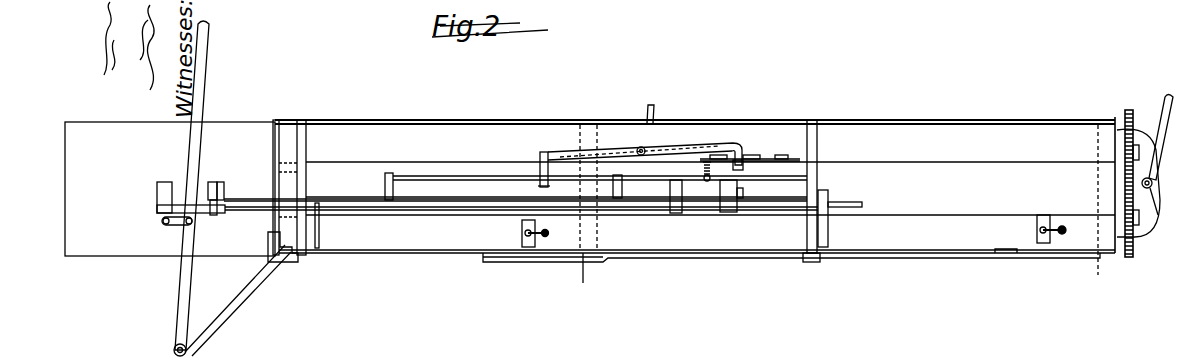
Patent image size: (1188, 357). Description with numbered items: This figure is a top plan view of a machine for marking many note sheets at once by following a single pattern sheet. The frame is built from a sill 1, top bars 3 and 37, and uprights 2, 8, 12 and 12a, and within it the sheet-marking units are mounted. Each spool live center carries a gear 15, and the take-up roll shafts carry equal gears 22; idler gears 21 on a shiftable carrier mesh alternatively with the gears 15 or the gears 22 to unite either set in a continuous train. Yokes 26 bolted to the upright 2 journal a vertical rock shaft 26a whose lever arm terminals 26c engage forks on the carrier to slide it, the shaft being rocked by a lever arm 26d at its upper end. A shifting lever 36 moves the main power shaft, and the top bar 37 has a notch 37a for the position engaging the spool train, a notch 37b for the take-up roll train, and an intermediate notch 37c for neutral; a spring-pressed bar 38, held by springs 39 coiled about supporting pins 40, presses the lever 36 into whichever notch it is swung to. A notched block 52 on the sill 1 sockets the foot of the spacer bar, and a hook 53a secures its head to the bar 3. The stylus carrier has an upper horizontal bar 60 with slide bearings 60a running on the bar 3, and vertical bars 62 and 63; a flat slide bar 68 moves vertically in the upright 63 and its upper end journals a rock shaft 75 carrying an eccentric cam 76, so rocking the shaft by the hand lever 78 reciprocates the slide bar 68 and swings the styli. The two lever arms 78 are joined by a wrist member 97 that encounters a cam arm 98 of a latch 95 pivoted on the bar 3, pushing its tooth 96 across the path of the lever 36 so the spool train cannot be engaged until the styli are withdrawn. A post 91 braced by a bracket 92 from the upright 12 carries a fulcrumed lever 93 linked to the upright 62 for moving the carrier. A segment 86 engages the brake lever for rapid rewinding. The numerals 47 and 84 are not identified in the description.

The sill 1 is at (246, 133).
The upright 2 is at (592, 187).
The top bar 3 is at (967, 233).
The upright 8 is at (806, 195).
The upright 12 is at (297, 255).
The upright 12a is at (287, 135).
The gear 15 is at (1128, 258).
The idler gear 21 is at (1127, 185).
The gear 22 is at (1130, 110).
The yoke 26 is at (1157, 142).
The vertical rock shaft 26a is at (1160, 215).
The outer terminal 26c is at (1155, 185).
The lever arm 26d is at (653, 108).
The shifting lever 36 is at (802, 172).
The top bar 37 is at (887, 127).
The notch 37a is at (716, 153).
The notch 37b is at (783, 153).
The notch 37c is at (752, 153).
The spring-pressed bar 38 is at (668, 163).
The spring 39 is at (705, 168).
The supporting pin 40 is at (710, 181).
The shaft 47 is at (832, 213).
The notched block 52 is at (522, 234).
The hook 53a is at (538, 240).
The upper horizontal bar 60 is at (255, 212).
The slide bearing 60a is at (319, 238).
The vertical bar 62 is at (165, 184).
The vertical bar 63 is at (205, 183).
The slide bar 68 is at (212, 215).
The rock shaft 75 is at (417, 200).
The eccentric cam 76 is at (212, 182).
The hand lever 78 is at (225, 190).
The bar 84 is at (747, 258).
The segment 86 is at (476, 254).
The post 91 is at (162, 223).
The bracket 92 is at (222, 308).
The lever 93 is at (182, 280).
The latch 95 is at (602, 150).
The tooth 96 is at (743, 167).
The wrist member 97 is at (440, 176).
The cam arm 98 is at (542, 170).